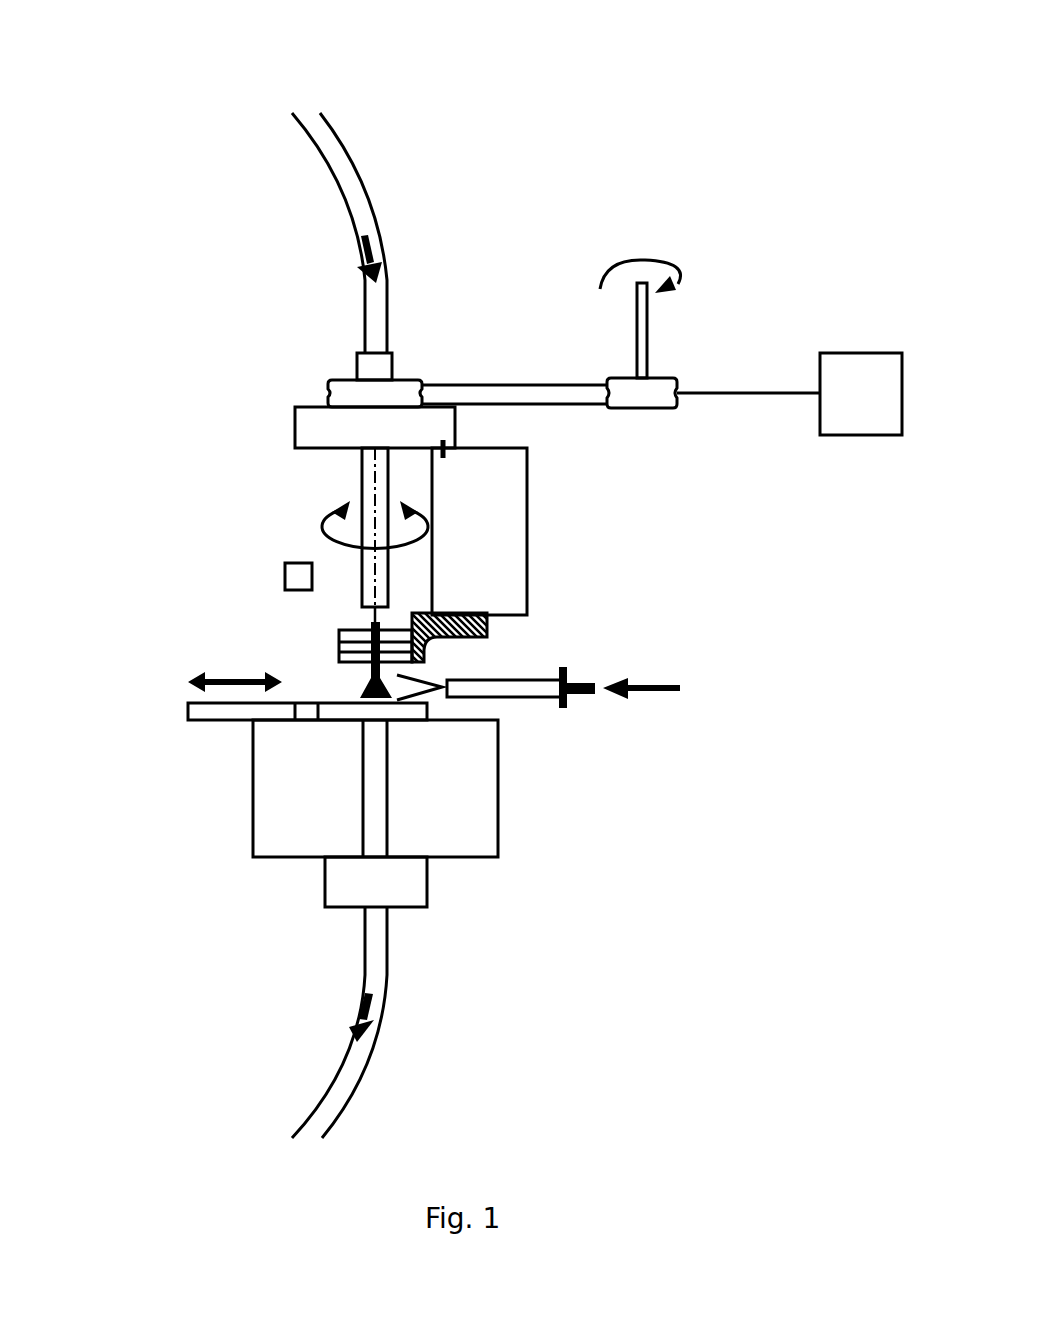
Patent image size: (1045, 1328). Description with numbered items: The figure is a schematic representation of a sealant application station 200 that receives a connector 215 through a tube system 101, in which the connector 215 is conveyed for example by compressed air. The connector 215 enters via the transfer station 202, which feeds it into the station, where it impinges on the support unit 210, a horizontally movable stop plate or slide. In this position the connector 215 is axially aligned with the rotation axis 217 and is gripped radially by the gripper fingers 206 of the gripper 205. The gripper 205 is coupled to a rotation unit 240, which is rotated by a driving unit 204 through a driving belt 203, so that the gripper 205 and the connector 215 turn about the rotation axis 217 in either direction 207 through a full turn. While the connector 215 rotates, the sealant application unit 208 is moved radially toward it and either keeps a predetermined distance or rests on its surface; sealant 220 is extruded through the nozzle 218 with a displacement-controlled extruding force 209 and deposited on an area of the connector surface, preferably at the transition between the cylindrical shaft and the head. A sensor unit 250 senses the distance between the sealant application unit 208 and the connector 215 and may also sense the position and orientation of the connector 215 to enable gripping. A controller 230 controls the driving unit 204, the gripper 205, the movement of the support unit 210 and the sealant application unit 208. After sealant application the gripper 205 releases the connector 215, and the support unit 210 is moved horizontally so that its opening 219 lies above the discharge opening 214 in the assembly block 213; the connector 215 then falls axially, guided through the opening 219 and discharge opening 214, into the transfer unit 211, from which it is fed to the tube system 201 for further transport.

The sealant application station 200 is at (200, 135).
The tube system 101 is at (362, 180).
The connector 215 is at (362, 258).
The transfer station 202 is at (393, 363).
The driving belt 203 is at (523, 382).
The driving unit 204 is at (645, 335).
The controller 230 is at (850, 353).
The rotation axis 217 is at (365, 482).
The rotation unit 240 is at (455, 425).
The gripper 205 is at (527, 540).
The direction of rotation 207 is at (322, 527).
The sensor unit 250 is at (285, 577).
The gripper fingers 206 is at (339, 642).
The nozzle 218 is at (440, 680).
The sealant application unit 208 is at (542, 697).
The sealant 220 is at (507, 697).
The extruding force 209 is at (653, 683).
The support unit 210 is at (188, 712).
The opening 219 is at (307, 713).
The assembly block 213 is at (253, 833).
The discharge opening 214 is at (382, 817).
The transfer unit 211 is at (425, 893).
The tube system 201 is at (385, 957).